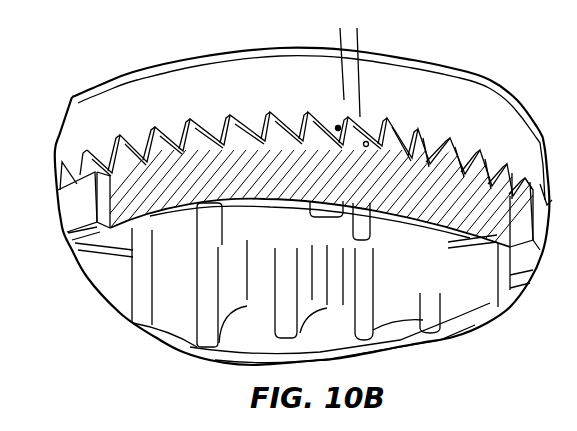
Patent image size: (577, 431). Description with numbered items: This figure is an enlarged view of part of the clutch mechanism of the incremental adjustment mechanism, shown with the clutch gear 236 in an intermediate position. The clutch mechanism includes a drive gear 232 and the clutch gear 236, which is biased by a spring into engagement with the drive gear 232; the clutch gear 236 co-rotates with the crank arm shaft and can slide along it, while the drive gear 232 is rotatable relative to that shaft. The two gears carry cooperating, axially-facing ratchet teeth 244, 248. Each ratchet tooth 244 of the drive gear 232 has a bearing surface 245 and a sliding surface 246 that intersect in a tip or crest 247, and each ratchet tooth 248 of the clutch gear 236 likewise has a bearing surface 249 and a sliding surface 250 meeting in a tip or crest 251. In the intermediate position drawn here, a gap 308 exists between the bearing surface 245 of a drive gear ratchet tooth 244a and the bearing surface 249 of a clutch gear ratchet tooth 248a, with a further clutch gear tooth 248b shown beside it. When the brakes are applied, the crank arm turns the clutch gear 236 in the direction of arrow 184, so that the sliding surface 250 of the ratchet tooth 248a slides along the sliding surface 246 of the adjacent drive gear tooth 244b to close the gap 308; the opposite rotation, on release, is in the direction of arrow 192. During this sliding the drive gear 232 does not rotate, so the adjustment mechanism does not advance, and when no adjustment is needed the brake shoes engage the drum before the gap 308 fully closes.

The arrow 184 is at (405, 300).
The arrow 192 is at (280, 292).
The drive gear 232 is at (167, 288).
The clutch gear 236 is at (80, 133).
The ratchet teeth 244 is at (112, 228).
The drive gear ratchet tooth 244a is at (353, 140).
The adjacent ratchet tooth 244b is at (333, 143).
The bearing surface 245 is at (145, 143).
The sliding surface 246 is at (217, 147).
The tip or crest 247 is at (207, 132).
The ratchet teeth 248 is at (137, 140).
The clutch gear ratchet tooth 248a is at (338, 126).
The ratchet tooth 248b is at (368, 141).
The bearing surface 249 is at (263, 123).
The sliding surface 250 is at (250, 143).
The tip or crest 251 is at (318, 207).
The gap 308 is at (300, 36).